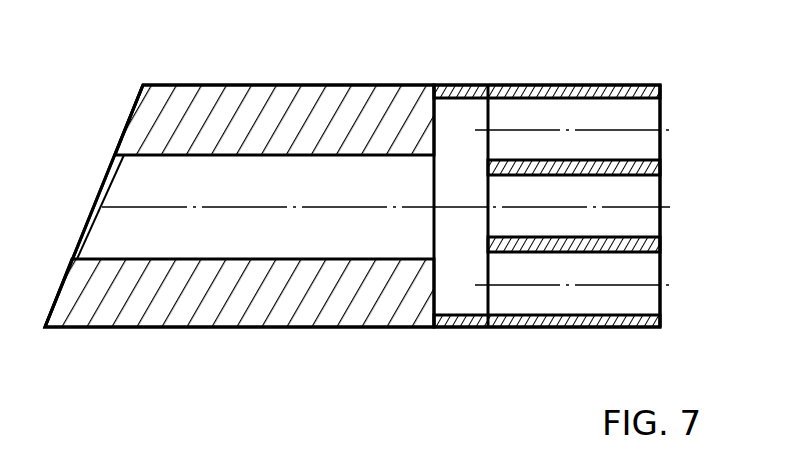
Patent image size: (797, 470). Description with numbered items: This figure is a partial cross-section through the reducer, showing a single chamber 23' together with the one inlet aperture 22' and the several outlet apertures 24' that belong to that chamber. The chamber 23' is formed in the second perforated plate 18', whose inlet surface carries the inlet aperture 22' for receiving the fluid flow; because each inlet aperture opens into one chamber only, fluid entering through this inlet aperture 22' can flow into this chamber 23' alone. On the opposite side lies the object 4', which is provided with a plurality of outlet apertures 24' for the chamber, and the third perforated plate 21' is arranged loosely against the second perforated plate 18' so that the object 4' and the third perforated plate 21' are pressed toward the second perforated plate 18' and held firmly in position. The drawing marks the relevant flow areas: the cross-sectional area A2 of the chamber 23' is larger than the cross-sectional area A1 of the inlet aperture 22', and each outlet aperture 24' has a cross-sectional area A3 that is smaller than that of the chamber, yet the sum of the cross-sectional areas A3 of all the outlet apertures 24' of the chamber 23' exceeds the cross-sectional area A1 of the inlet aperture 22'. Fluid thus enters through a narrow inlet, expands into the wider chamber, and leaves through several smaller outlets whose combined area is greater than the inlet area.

The object 4' is at (352, 234).
The second perforated plate 18' is at (239, 231).
The third perforated plate 21' is at (547, 346).
The inlet aperture 22' is at (81, 206).
The chamber 23' is at (547, 72).
The outlet aperture 24' is at (602, 206).
The cross-sectional area of the inlet aperture A1 is at (386, 192).
The cross-sectional area of the chamber A2 is at (461, 206).
The cross-sectional area of the outlet aperture A3 is at (572, 196).